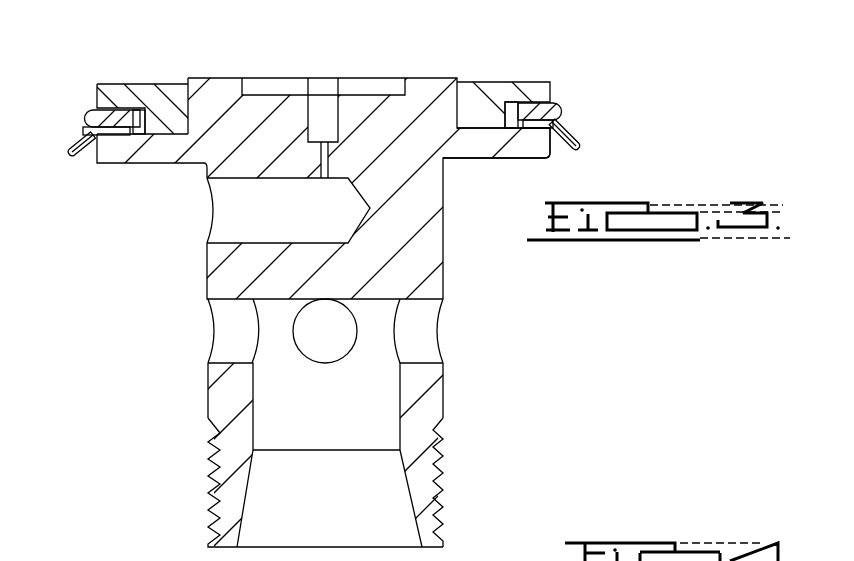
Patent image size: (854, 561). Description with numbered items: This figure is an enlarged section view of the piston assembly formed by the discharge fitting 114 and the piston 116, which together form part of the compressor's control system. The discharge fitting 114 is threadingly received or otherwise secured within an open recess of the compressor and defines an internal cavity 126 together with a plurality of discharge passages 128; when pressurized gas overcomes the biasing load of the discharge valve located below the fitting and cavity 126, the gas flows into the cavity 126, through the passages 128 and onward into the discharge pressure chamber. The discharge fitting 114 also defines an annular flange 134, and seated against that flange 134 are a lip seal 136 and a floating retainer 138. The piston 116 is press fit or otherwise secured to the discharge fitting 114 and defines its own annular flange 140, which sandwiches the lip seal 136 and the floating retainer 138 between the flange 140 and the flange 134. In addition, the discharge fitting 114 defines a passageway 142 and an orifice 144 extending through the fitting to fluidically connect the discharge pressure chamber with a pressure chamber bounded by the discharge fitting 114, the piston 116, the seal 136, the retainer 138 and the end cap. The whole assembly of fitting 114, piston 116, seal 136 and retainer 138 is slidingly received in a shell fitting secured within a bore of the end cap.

The discharge fitting 114 is at (144, 356).
The piston 116 is at (486, 80).
The internal cavity 126 is at (352, 521).
The discharge passages 128 is at (420, 327).
The annular flange 134 is at (530, 152).
The lip seal 136 is at (578, 138).
The floating retainer 138 is at (557, 112).
The annular flange 140 is at (550, 83).
The passageway 142 is at (323, 110).
The orifice 144 is at (323, 160).